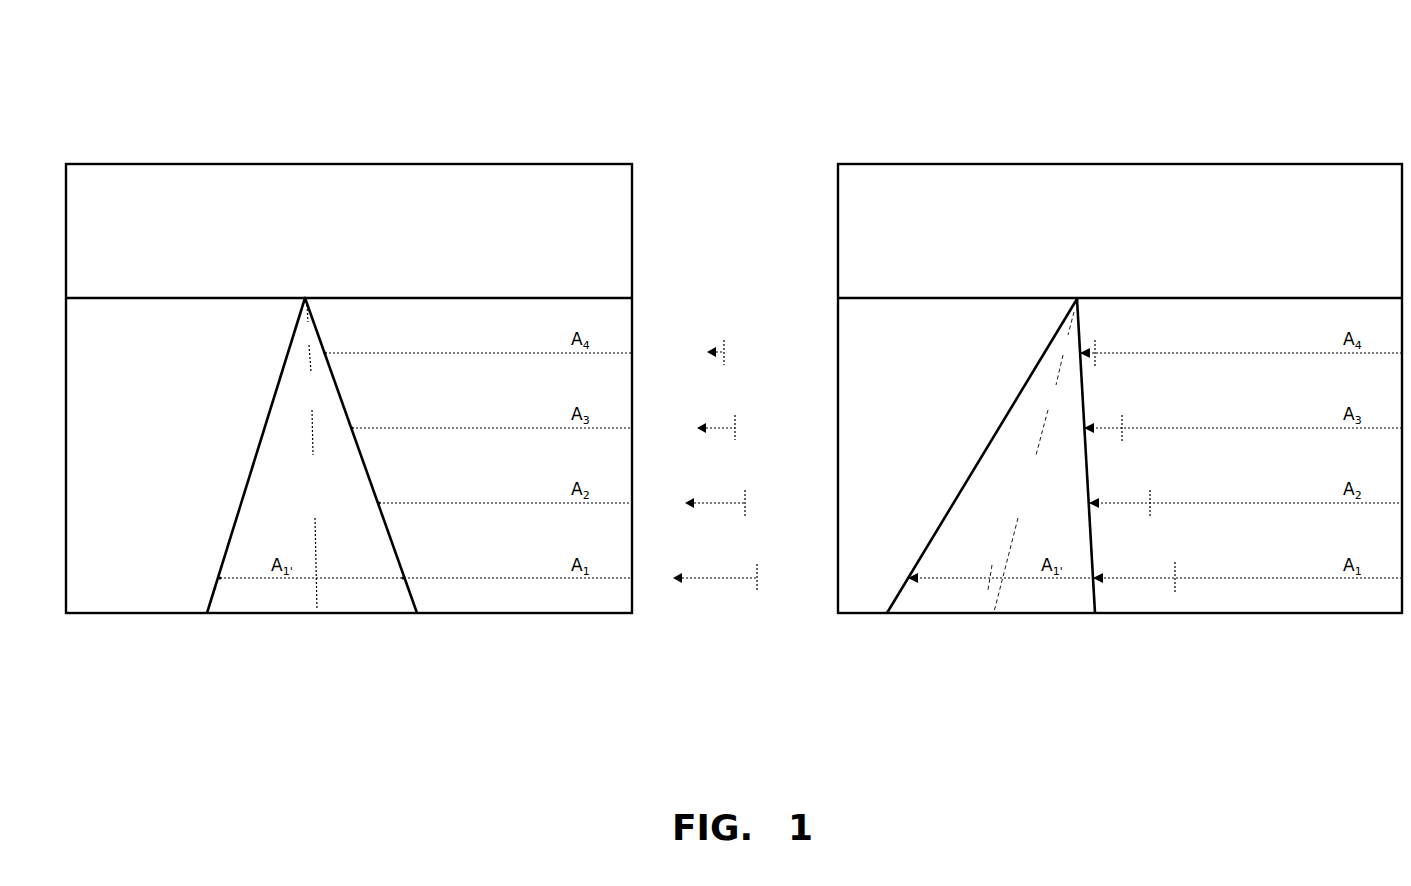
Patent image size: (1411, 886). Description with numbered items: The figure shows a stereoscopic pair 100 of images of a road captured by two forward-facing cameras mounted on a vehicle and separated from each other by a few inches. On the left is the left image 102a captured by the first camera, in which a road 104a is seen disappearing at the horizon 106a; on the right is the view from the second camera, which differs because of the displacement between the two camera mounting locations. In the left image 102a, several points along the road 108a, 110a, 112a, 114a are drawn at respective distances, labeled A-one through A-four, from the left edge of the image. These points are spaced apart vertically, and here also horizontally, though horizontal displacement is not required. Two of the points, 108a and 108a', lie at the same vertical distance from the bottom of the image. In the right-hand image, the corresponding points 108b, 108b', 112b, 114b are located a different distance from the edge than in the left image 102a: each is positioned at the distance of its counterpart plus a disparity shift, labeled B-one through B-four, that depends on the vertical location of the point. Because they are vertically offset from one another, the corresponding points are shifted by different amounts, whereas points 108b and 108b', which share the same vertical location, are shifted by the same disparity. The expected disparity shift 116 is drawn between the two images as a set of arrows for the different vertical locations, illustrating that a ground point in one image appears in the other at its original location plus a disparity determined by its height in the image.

The stereoscopic pair 100 is at (758, 42).
The left image 102a is at (312, 163).
The road 104a is at (273, 402).
The horizon 106a is at (306, 296).
The point along the road 108a is at (446, 554).
The point along the road 108a' is at (177, 553).
The point along the road 110a is at (383, 502).
The point along the road 112a is at (355, 427).
The point along the road 114a is at (327, 352).
The corresponding point 108b is at (1138, 554).
The corresponding point 108b' is at (887, 551).
The corresponding point 112b is at (1087, 424).
The corresponding point 114b is at (1083, 349).
The expected disparity shift 116 is at (730, 210).